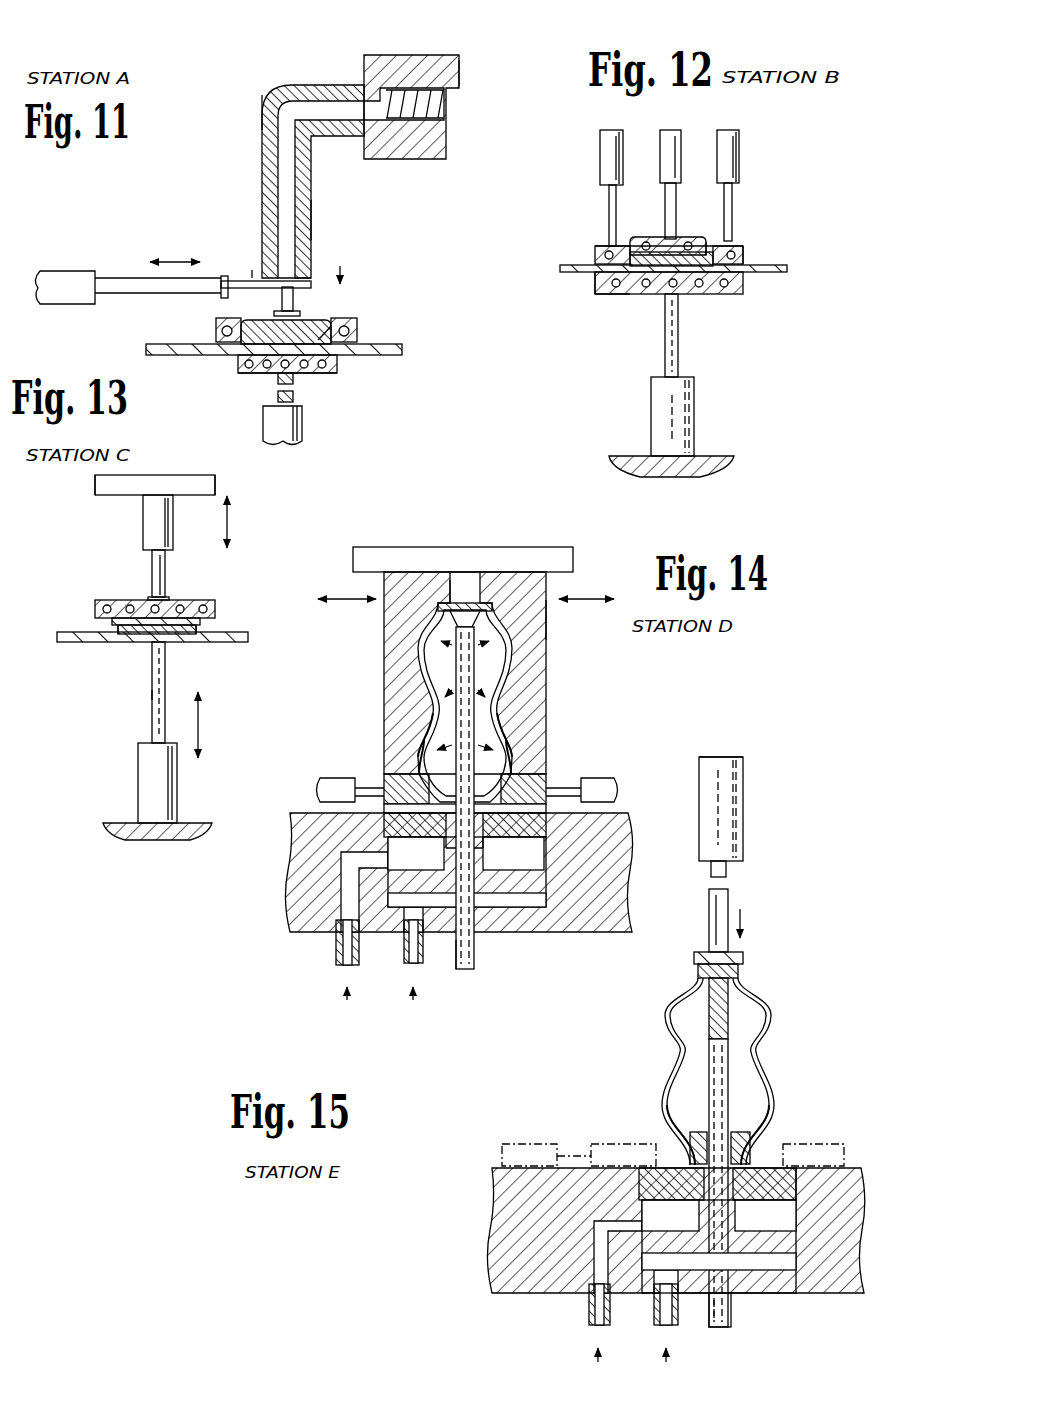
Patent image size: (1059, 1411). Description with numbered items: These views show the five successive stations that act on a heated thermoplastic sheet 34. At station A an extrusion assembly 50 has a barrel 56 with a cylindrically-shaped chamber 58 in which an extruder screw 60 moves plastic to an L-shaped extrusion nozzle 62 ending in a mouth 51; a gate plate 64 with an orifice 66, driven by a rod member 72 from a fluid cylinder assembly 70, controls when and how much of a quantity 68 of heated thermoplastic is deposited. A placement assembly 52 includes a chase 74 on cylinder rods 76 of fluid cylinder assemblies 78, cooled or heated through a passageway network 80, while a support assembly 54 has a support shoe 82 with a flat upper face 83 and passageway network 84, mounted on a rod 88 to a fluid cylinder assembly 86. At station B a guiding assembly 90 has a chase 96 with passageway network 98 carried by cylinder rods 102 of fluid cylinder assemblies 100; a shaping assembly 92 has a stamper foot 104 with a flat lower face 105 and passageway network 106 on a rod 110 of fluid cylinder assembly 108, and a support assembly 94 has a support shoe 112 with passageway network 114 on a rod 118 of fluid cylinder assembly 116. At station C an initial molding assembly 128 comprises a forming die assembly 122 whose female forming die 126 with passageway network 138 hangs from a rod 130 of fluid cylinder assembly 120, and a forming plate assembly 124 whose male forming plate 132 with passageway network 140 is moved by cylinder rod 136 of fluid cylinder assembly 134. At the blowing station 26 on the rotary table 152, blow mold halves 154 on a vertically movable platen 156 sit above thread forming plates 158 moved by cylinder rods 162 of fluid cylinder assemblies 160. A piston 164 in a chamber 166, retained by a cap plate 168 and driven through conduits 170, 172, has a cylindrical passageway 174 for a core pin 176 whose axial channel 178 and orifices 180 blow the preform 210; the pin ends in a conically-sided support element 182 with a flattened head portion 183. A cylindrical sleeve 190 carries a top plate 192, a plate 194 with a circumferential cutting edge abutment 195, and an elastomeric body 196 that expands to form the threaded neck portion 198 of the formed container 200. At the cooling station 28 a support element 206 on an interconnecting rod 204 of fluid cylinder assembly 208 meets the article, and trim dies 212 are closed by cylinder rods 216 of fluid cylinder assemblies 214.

In FIG. 14, the blowing station 26 is at (598, 686).
In FIG. 15, the cooling station 28 is at (830, 898).
In FIG. 11, the thermoplastic sheet 34 is at (388, 355).
In FIG. 12, the thermoplastic sheet 34 is at (776, 273).
In FIG. 13, the thermoplastic sheet 34 is at (248, 637).
In FIG. 11, the extrusion assembly 50 is at (258, 109).
In FIG. 11, the mouth 51 is at (306, 277).
In FIG. 11, the placement assembly 52 is at (364, 268).
In FIG. 11, the support assembly 54 is at (230, 363).
In FIG. 11, the barrel 56 is at (395, 55).
In FIG. 11, the cylindrically-shaped chamber 58 is at (459, 99).
In FIG. 11, the extruder screw 60 is at (448, 110).
In FIG. 11, the L-shaped extrusion nozzle 62 is at (262, 158).
In FIG. 11, the gate plate 64 is at (243, 280).
In FIG. 11, the orifice 66 is at (252, 277).
In FIG. 11, the quantity of heated thermoplastic material 68 is at (304, 337).
In FIG. 12, the quantity of heated thermoplastic material 68 is at (658, 269).
In FIG. 13, the quantity of heated thermoplastic material 68 is at (217, 620).
In FIG. 11, the fluid cylinder assembly 70 is at (68, 280).
In FIG. 11, the rod member 72 is at (126, 280).
In FIG. 11, the chase 74 is at (216, 326).
In FIG. 11, the cylinder rods 76 is at (282, 293).
In FIG. 11, the fluid cylinder assemblies 78 is at (311, 227).
In FIG. 11, the passageway network 80 is at (229, 327).
In FIG. 15, the passageway network 80 is at (726, 1063).
In FIG. 11, the support shoe 82 is at (338, 360).
In FIG. 11, the flat upper face 83 is at (318, 340).
In FIG. 11, the passageway network 84 is at (322, 368).
In FIG. 11, the fluid cylinder assembly 86 is at (293, 428).
In FIG. 11, the rod 88 is at (278, 395).
In FIG. 12, the guiding assembly 90 is at (764, 238).
In FIG. 12, the shaping assembly 92 is at (623, 211).
In FIG. 12, the support assembly 94 is at (734, 301).
In FIG. 12, the chase 96 is at (745, 252).
In FIG. 12, the passageway network 98 is at (599, 246).
In FIG. 12, the fluid cylinder assemblies 100 is at (606, 143).
In FIG. 12, the cylinder rods 102 is at (609, 195).
In FIG. 12, the stamper foot 104 is at (662, 236).
In FIG. 12, the flat lower face 105 is at (706, 246).
In FIG. 12, the passageway network 106 is at (685, 241).
In FIG. 12, the fluid cylinder assembly 108 is at (671, 139).
In FIG. 12, the rod 110 is at (668, 195).
In FIG. 12, the support shoe 112 is at (600, 285).
In FIG. 12, the passageway network 114 is at (627, 296).
In FIG. 12, the fluid cylinder assembly 116 is at (676, 435).
In FIG. 12, the rod 118 is at (674, 349).
In FIG. 13, the fluid cylinder assembly 120 is at (214, 563).
In FIG. 13, the forming die assembly 122 is at (110, 557).
In FIG. 13, the forming plate assembly 124 is at (143, 673).
In FIG. 13, the female forming die 126 is at (193, 598).
In FIG. 13, the initial molding assembly 128 is at (146, 566).
In FIG. 13, the rod 130 is at (165, 570).
In FIG. 13, the male forming plate 132 is at (187, 642).
In FIG. 13, the fluid cylinder assembly 134 is at (143, 767).
In FIG. 13, the cylinder rod 136 is at (157, 693).
In FIG. 13, the passageway network 138 is at (133, 598).
In FIG. 13, the passageway network 140 is at (128, 643).
In FIG. 14, the rotary table 152 is at (623, 886).
In FIG. 15, the rotary table 152 is at (490, 1198).
In FIG. 14, the blow mold halves 154 is at (396, 694).
In FIG. 14, the vertically movable platen 156 is at (569, 557).
In FIG. 14, the thread forming plates 158 is at (417, 796).
In FIG. 14, the fluid cylinder assemblies 160 is at (314, 786).
In FIG. 14, the cylinder rods 162 is at (354, 788).
In FIG. 14, the piston 164 is at (526, 888).
In FIG. 15, the piston 164 is at (783, 1281).
In FIG. 14, the chamber 166 is at (416, 863).
In FIG. 15, the chamber 166 is at (670, 1227).
In FIG. 14, the cap plate 168 is at (516, 853).
In FIG. 15, the cap plate 168 is at (798, 1172).
In FIG. 14, the conduit 170 is at (336, 940).
In FIG. 15, the conduit 170 is at (590, 1300).
In FIG. 14, the conduit 172 is at (404, 948).
In FIG. 15, the conduit 172 is at (654, 1310).
In FIG. 14, the cylindrical passageway 174 is at (468, 870).
In FIG. 14, the core pin 176 is at (474, 958).
In FIG. 15, the core pin 176 is at (731, 1315).
In FIG. 14, the axial channel 178 is at (456, 955).
In FIG. 15, the axial channel 178 is at (714, 1322).
In FIG. 14, the orifices 180 is at (421, 668).
In FIG. 14, the conically-sided support element 182 is at (478, 603).
In FIG. 15, the conically-sided support element 182 is at (735, 983).
In FIG. 14, the flattened head portion 183 is at (451, 603).
In FIG. 14, the cylindrical sleeve 190 is at (530, 819).
In FIG. 15, the cylindrical sleeve 190 is at (768, 1215).
In FIG. 14, the top plate 192 is at (518, 743).
In FIG. 15, the top plate 192 is at (750, 1125).
In FIG. 14, the plate 194 is at (402, 825).
In FIG. 15, the plate 194 is at (767, 1166).
In FIG. 14, the circumferential cutting edge abutment 195 is at (472, 846).
In FIG. 15, the circumferential cutting edge abutment 195 is at (687, 1149).
In FIG. 14, the elastomeric body 196 is at (522, 759).
In FIG. 15, the elastomeric body 196 is at (752, 1140).
In FIG. 14, the threaded neck portion 198 is at (431, 759).
In FIG. 15, the threaded neck portion 198 is at (680, 1125).
In FIG. 14, the formed container 200 is at (433, 728).
In FIG. 15, the formed container 200 is at (678, 1082).
In FIG. 15, the interconnecting rod 204 is at (728, 894).
In FIG. 15, the support element 206 is at (743, 957).
In FIG. 15, the fluid cylinder assembly 208 is at (738, 813).
In FIG. 13, the preform 210 is at (115, 623).
In FIG. 15, the trim dies 212 is at (620, 1149).
In FIG. 15, the fluid cylinder assemblies 214 is at (517, 1144).
In FIG. 15, the cylinder rods 216 is at (574, 1156).